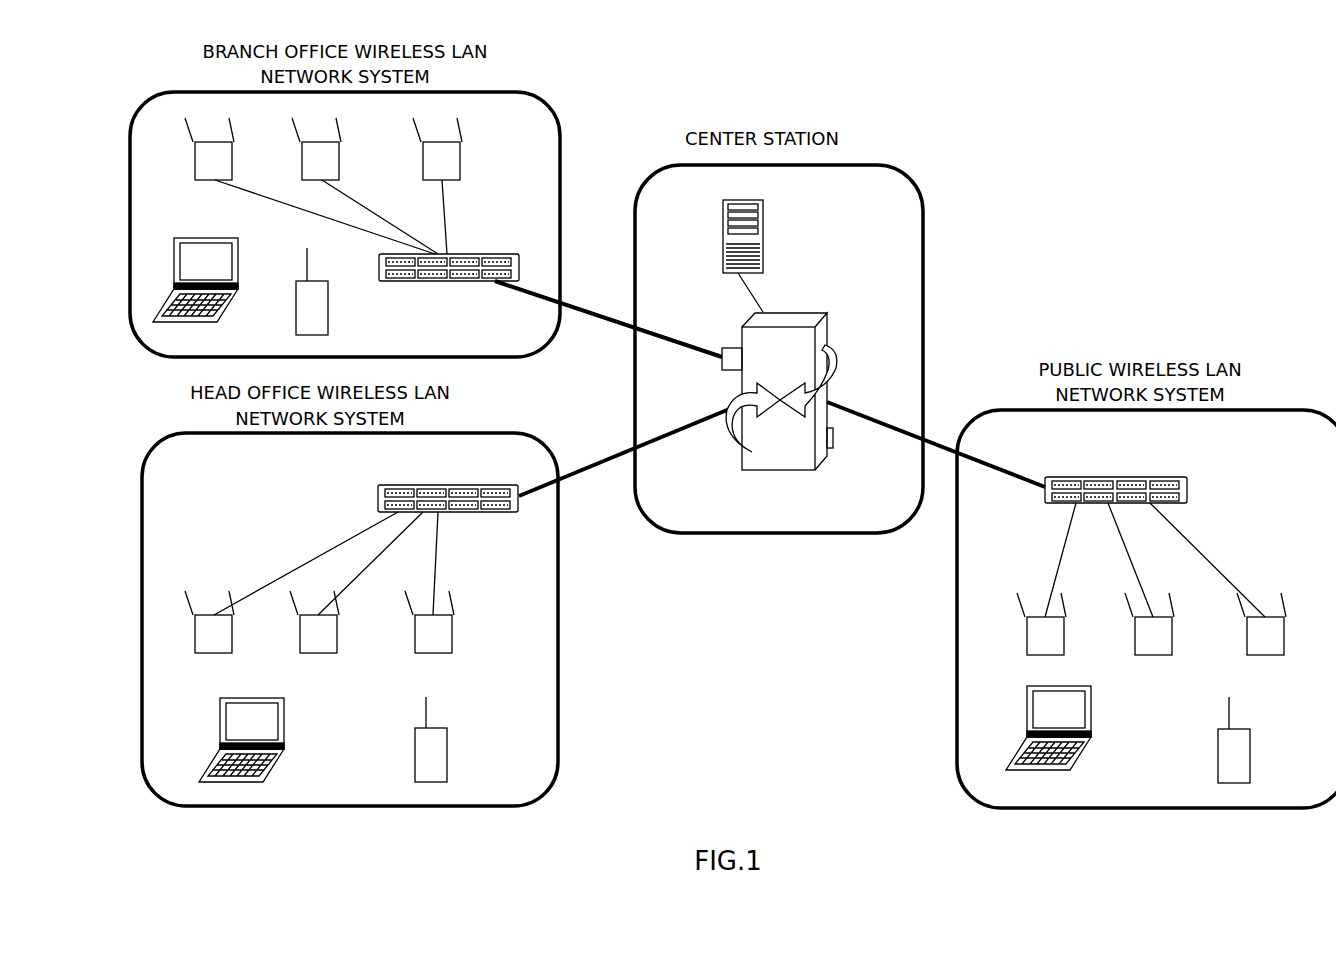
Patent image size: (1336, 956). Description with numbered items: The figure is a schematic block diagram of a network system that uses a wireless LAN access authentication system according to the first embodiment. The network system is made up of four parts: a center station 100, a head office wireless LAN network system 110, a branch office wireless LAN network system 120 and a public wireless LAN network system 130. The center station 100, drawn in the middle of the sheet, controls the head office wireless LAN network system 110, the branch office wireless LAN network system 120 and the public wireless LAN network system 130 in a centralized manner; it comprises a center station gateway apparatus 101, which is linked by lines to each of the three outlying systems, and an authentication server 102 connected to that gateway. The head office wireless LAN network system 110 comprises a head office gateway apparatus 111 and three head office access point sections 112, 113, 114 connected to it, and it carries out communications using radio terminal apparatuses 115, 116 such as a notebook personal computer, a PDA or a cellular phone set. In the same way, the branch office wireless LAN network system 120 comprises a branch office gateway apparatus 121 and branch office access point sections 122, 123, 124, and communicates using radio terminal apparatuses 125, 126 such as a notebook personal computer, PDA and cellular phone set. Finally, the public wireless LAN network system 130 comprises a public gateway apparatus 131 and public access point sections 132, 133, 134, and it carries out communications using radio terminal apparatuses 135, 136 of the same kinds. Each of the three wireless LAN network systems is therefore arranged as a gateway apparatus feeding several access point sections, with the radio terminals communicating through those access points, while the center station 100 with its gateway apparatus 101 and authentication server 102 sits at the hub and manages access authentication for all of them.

The center station 100 is at (924, 265).
The center station gateway apparatus 101 is at (832, 300).
The authentication server 102 is at (790, 237).
The head office wireless LAN network system 110 is at (582, 578).
The head office gateway apparatus 111 is at (413, 483).
The head office access point section 112 is at (193, 638).
The head office access point section 113 is at (300, 638).
The head office access point section 114 is at (415, 638).
The radio terminal apparatus 115 is at (312, 717).
The radio terminal apparatus 116 is at (477, 736).
The branch office wireless LAN network system 120 is at (583, 147).
The branch office gateway apparatus 121 is at (507, 240).
The branch office access point section 122 is at (193, 157).
The branch office access point section 123 is at (302, 157).
The branch office access point section 124 is at (423, 157).
The radio terminal apparatus 125 is at (263, 252).
The radio terminal apparatus 126 is at (355, 314).
The public wireless LAN network system 130 is at (957, 622).
The public gateway apparatus 131 is at (1165, 468).
The public access point section 132 is at (1025, 640).
The public access point section 133 is at (1135, 640).
The public access point section 134 is at (1247, 640).
The radio terminal apparatus 135 is at (1121, 712).
The radio terminal apparatus 136 is at (1251, 743).